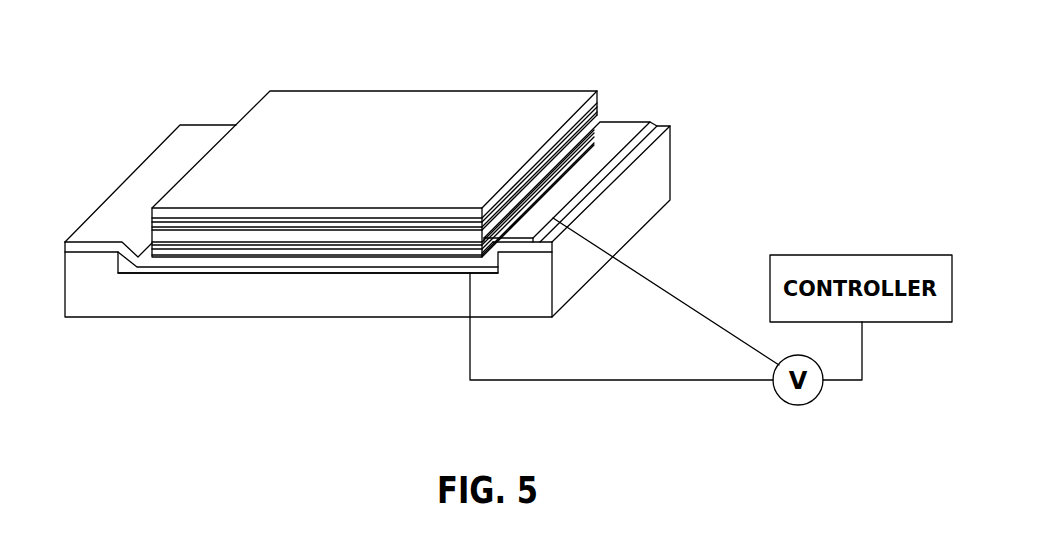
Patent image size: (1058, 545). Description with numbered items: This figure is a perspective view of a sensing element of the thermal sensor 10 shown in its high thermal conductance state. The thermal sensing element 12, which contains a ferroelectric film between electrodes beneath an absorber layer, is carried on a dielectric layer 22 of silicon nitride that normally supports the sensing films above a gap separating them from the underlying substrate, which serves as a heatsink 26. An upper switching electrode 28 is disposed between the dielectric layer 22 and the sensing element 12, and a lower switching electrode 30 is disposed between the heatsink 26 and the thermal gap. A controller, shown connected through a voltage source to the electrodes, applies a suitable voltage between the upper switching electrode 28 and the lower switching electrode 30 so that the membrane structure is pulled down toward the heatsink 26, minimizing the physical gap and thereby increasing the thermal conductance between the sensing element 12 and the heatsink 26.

The thermal sensor 10 is at (194, 101).
The thermal sensing element 12 is at (503, 113).
The dielectric layer 22 is at (660, 142).
The heatsink 26 is at (530, 297).
The upper switching electrode 28 is at (622, 133).
The lower switching electrode 30 is at (202, 273).